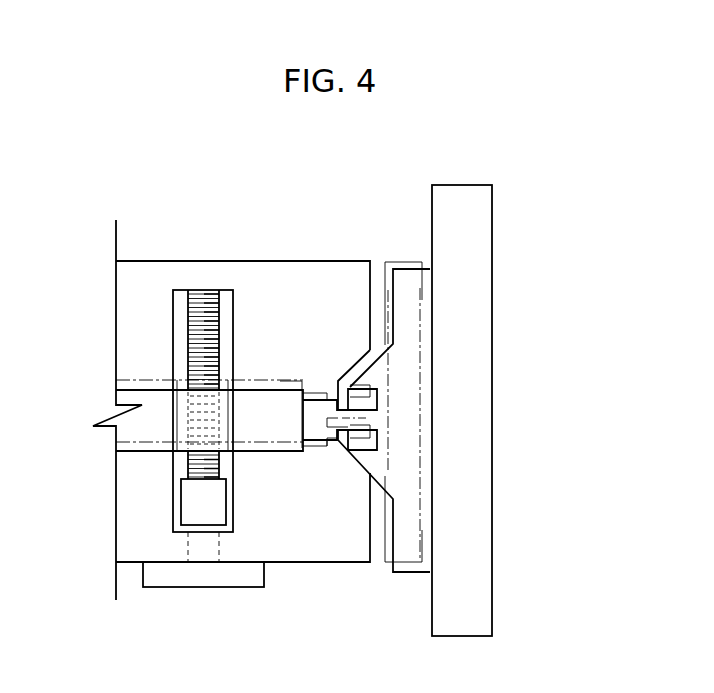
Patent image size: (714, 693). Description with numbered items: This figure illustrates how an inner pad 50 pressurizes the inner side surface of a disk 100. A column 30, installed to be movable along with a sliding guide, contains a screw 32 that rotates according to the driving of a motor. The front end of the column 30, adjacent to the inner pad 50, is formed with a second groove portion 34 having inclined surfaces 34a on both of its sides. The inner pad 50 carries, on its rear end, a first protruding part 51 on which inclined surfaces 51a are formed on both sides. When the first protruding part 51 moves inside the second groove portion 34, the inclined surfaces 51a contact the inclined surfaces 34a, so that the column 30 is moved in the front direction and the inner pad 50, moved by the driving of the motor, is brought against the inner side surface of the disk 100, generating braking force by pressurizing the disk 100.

The column 30 is at (174, 252).
The screw 32 is at (196, 348).
The second groove portion 34 is at (345, 400).
The inclined surface 34a is at (376, 361).
The inner pad 50 is at (405, 252).
The first protruding part 51 is at (375, 463).
The inclined surface 51a is at (398, 359).
The disk 100 is at (505, 578).